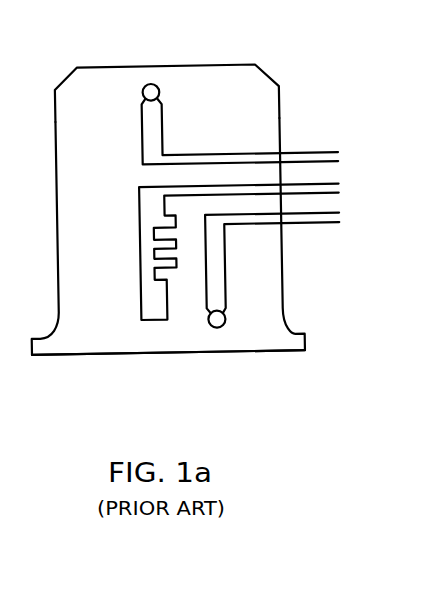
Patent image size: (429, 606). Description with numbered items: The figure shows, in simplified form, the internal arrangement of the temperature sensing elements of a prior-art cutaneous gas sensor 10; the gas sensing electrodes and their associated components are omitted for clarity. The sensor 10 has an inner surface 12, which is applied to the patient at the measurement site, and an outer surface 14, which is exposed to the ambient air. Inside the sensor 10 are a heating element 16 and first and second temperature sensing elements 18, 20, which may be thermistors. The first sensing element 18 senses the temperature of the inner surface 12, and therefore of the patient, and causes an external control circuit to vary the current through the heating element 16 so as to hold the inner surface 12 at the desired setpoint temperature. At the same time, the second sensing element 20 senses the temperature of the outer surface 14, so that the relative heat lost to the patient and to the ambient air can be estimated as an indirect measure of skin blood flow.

The cutaneous gas sensor 10 is at (179, 212).
The inner surface 12 is at (122, 355).
The outer surface 14 is at (88, 65).
The heating element 16 is at (176, 268).
The first temperature sensing element 18 is at (223, 322).
The second temperature sensing element 20 is at (161, 88).